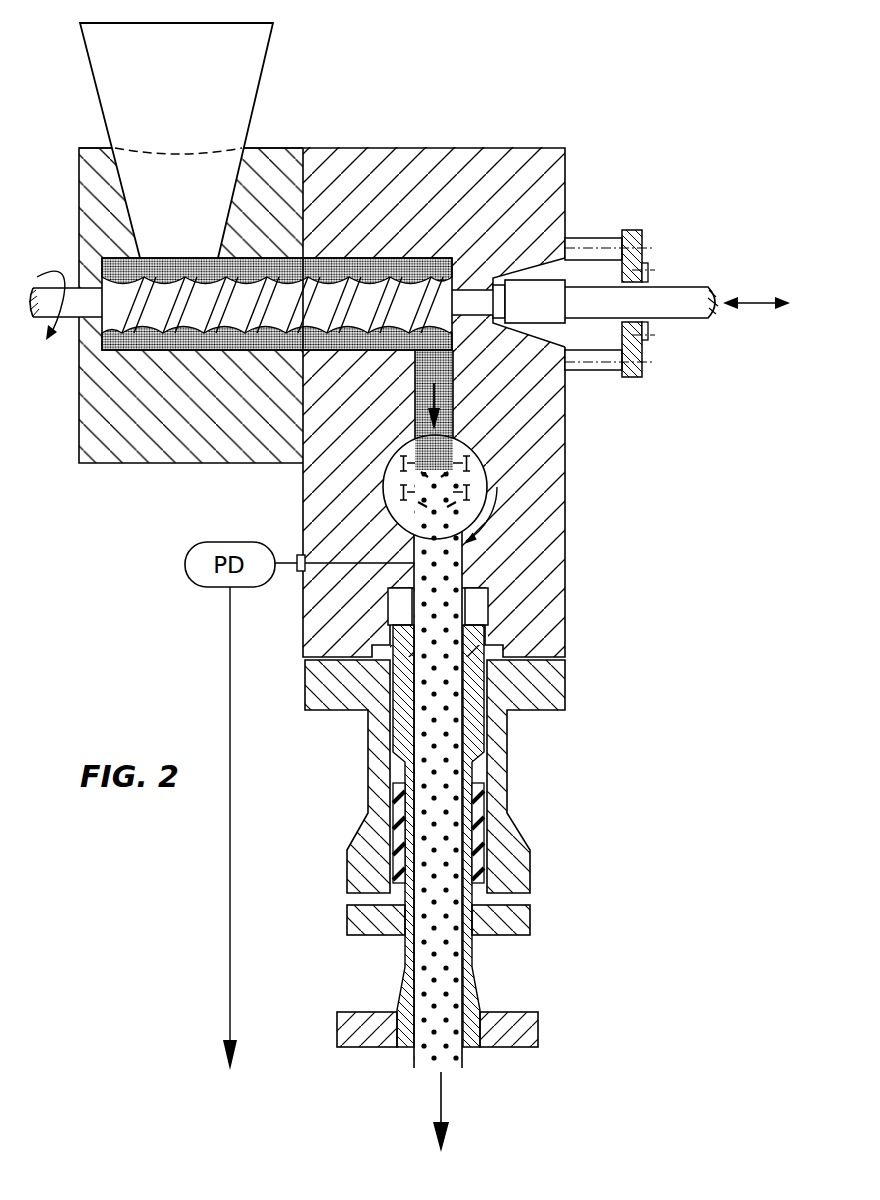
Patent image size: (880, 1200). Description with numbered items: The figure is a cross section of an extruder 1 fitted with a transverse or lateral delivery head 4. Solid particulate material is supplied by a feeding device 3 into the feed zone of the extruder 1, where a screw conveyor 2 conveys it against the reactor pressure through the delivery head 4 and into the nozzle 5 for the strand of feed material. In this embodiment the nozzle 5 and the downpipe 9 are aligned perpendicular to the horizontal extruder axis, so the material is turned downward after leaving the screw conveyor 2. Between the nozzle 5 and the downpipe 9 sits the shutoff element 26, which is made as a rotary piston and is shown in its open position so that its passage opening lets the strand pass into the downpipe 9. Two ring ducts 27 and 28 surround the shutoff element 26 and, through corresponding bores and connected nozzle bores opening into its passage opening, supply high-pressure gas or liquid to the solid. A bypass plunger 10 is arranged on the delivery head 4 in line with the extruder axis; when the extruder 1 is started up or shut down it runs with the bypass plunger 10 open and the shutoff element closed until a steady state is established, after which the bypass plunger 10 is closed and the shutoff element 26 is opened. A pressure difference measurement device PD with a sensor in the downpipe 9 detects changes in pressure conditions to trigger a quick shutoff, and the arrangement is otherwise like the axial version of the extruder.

The extruder 1 is at (277, 187).
The screw conveyor 2 is at (397, 293).
The feeding device 3 is at (237, 128).
The delivery head 4 is at (490, 210).
The nozzle 5 is at (455, 364).
The downpipe 9 is at (430, 603).
The bypass plunger 10 is at (658, 300).
The shutoff element 26 is at (478, 481).
The ring duct 27 is at (488, 457).
The ring duct 28 is at (480, 518).